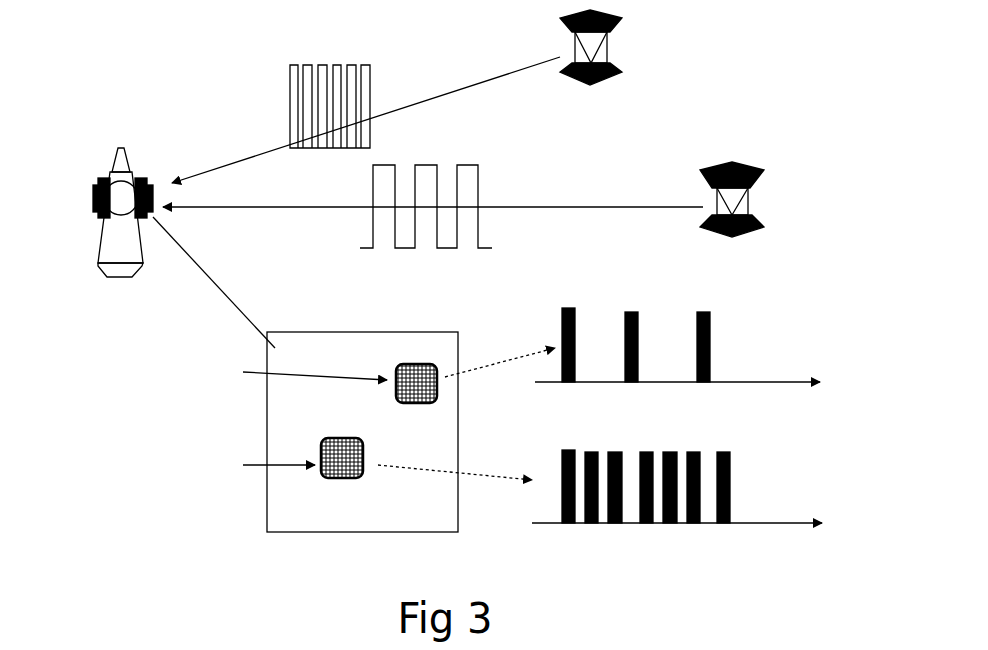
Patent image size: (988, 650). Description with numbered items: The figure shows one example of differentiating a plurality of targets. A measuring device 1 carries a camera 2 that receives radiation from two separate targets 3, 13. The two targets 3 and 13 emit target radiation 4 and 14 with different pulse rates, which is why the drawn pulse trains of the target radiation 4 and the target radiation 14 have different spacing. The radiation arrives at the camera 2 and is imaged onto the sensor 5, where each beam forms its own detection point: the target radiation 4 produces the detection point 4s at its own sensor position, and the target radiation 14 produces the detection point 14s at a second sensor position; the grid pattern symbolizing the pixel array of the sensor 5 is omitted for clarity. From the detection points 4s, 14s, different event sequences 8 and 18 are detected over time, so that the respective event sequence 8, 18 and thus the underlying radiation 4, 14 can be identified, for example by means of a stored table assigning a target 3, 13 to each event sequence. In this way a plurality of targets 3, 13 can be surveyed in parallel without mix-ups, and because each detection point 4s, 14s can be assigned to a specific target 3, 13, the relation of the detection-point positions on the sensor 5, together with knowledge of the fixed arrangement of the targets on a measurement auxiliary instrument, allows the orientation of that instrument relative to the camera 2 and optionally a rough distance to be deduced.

The rocket / vehicle 1 is at (88, 147).
The camera 2 is at (148, 175).
The target 3 is at (745, 163).
The target radiation 4 is at (442, 160).
The sensor 5 is at (342, 318).
The detection point 4s is at (418, 357).
The event sequence 8 is at (742, 320).
The target 13 is at (608, 65).
The target radiation 14 is at (327, 50).
The detection point 14s is at (342, 485).
The event sequence 18 is at (730, 460).